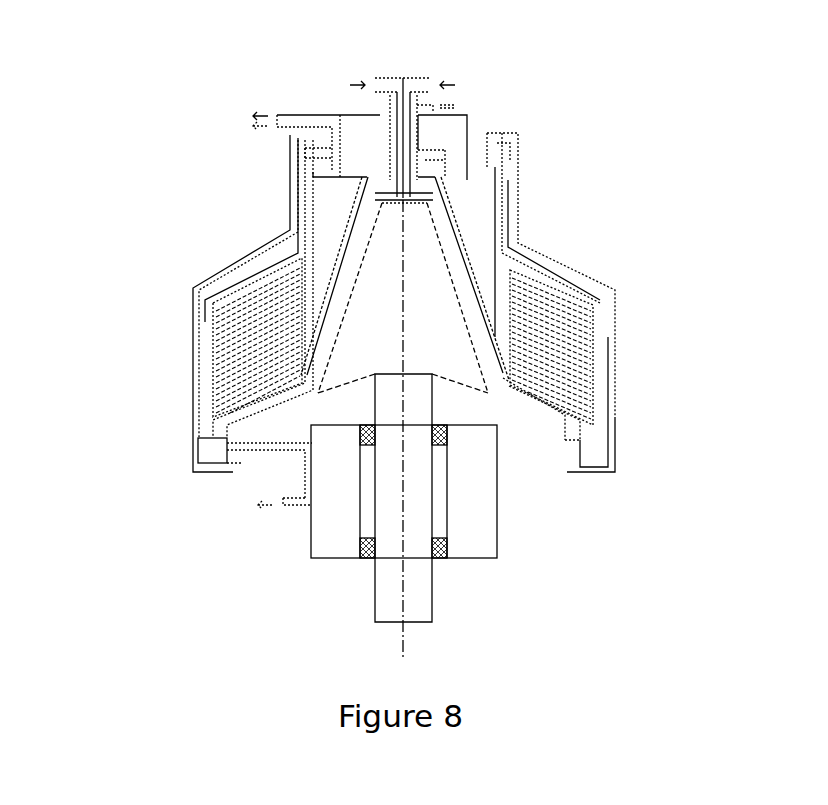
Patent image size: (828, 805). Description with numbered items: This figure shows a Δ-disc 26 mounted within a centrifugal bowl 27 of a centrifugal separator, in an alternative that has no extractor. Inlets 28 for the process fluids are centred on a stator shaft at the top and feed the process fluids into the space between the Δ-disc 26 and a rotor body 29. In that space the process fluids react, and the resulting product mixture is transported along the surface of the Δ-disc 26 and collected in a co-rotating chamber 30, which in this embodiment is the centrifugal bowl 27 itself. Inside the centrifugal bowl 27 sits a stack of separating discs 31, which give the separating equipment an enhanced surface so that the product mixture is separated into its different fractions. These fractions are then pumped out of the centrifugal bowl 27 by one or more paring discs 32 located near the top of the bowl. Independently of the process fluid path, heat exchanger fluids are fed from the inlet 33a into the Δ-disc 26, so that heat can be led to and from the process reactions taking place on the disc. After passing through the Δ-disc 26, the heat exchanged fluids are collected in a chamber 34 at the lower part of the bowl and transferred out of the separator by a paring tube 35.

The Δ-disc 26 is at (348, 245).
The centrifugal bowl 27 is at (197, 310).
The inlets 28 is at (388, 196).
The rotor body 29 is at (457, 290).
The co-rotating chamber 30 is at (600, 380).
The stack of separating discs 31 is at (235, 363).
The paring disc 32 is at (330, 140).
The inlet 33a is at (433, 103).
The chamber 34 is at (207, 462).
The paring tube 35 is at (292, 507).